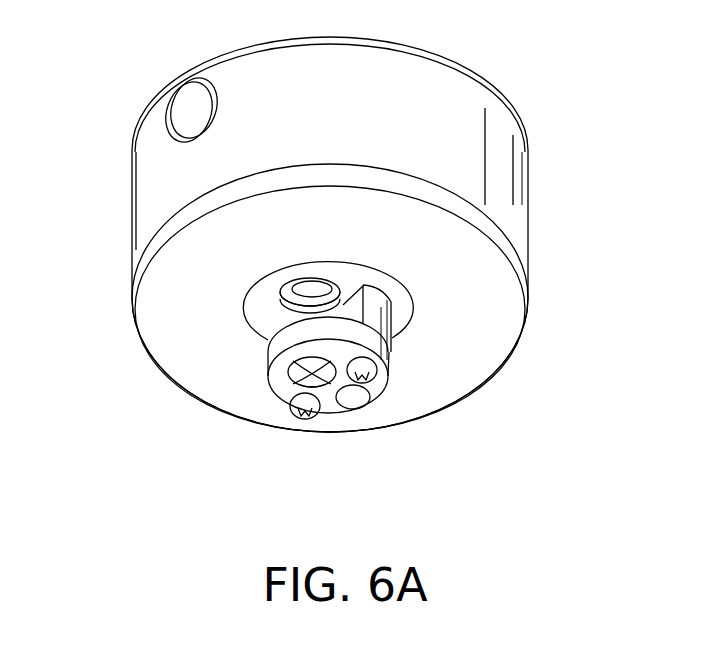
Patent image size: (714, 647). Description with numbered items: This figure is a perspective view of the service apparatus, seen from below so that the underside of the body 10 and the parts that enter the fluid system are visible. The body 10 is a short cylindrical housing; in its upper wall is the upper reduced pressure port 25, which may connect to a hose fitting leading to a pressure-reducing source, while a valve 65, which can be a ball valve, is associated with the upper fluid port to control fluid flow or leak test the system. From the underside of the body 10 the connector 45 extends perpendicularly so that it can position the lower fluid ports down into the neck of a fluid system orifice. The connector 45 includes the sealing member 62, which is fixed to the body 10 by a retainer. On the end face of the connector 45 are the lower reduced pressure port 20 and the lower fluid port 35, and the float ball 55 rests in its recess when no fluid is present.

The body 10 is at (452, 94).
The lower reduced pressure port 20 is at (380, 277).
The upper reduced pressure port 25 is at (192, 110).
The lower fluid port 35 is at (355, 413).
The connector 45 is at (393, 353).
The float ball 55 is at (290, 396).
The sealing member 62 is at (260, 317).
The valve 65 is at (163, 229).